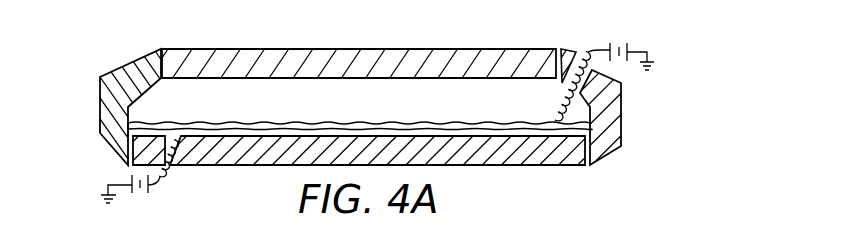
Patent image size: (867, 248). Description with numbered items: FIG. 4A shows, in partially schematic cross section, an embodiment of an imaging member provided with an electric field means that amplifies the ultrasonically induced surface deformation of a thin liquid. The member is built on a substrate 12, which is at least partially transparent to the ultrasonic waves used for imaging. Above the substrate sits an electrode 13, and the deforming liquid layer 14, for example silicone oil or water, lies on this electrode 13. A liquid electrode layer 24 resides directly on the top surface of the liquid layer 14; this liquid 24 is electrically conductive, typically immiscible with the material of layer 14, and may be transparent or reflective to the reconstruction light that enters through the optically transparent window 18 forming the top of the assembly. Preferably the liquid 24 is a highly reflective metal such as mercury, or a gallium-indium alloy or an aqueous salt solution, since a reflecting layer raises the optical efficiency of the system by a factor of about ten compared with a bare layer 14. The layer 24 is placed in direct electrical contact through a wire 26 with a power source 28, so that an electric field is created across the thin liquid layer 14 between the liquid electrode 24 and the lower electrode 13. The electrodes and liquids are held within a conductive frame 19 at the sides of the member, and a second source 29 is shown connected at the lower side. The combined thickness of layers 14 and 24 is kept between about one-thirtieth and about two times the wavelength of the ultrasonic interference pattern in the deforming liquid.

The substrate 12 is at (473, 165).
The electrode 13 is at (427, 129).
The liquid layer 14 is at (212, 123).
The window 18 is at (458, 49).
The conductive frame 19 is at (100, 106).
The liquid electrode layer 24 is at (338, 123).
The wire 26 is at (559, 86).
The power source 28 is at (647, 50).
The voltage source and ground 29 is at (108, 185).